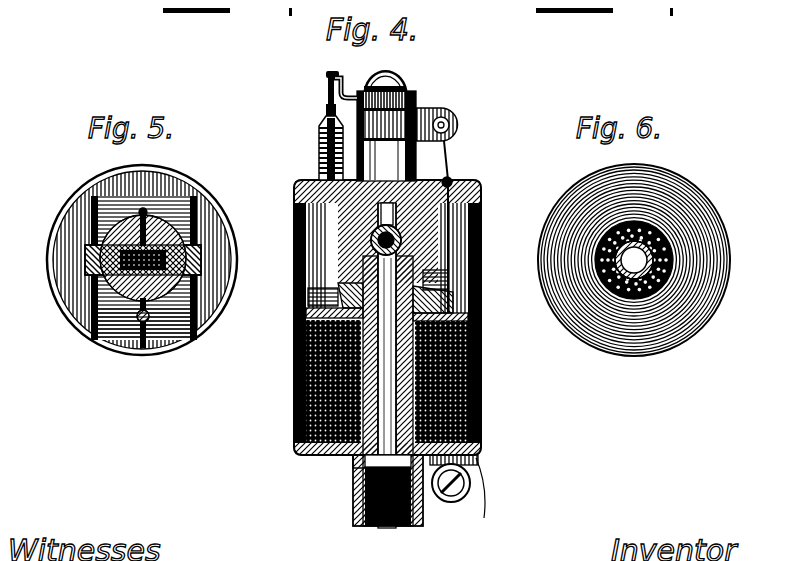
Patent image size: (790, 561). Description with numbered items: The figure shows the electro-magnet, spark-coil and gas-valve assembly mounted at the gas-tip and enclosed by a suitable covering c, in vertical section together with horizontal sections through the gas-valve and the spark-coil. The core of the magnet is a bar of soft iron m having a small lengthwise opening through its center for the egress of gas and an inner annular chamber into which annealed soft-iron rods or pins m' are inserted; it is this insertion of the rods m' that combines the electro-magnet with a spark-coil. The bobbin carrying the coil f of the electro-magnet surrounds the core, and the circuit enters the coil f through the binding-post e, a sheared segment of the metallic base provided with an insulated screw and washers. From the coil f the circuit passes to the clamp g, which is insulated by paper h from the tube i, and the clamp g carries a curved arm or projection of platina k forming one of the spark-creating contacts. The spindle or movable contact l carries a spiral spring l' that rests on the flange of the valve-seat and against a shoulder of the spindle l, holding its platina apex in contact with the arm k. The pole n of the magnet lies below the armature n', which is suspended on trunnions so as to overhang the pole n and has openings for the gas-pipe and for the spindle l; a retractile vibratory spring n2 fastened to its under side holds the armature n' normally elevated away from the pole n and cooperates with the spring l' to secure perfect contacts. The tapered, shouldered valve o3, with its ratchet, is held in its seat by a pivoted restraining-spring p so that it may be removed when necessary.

In FIG. 4, the covering c is at (287, 413).
In FIG. 5, the covering c is at (66, 198).
In FIG. 6, the covering c is at (592, 336).
In FIG. 4, the binding-post e is at (447, 496).
In FIG. 4, the coil of the electro-magnet f is at (473, 385).
In FIG. 6, the coil of the electro-magnet f is at (634, 260).
In FIG. 4, the clamp g is at (431, 106).
In FIG. 4, the paper insulation h is at (411, 100).
In FIG. 4, the tube i is at (386, 126).
In FIG. 4, the curved arm or projection of platina k is at (322, 66).
In FIG. 4, the spindle or movable contact l is at (305, 106).
In FIG. 5, the spindle or movable contact l is at (127, 278).
In FIG. 4, the spiral spring l' is at (296, 148).
In FIG. 4, the bar of soft iron m is at (359, 490).
In FIG. 6, the bar of soft iron m is at (624, 266).
In FIG. 4, the soft-iron rods or pins m' is at (338, 476).
In FIG. 6, the soft-iron rods or pins m' is at (658, 276).
In FIG. 4, the pole of the electro-magnet n is at (465, 306).
In FIG. 4, the armature n' is at (310, 290).
In FIG. 5, the armature n' is at (144, 324).
In FIG. 4, the retractile vibratory spring n2 is at (287, 300).
In FIG. 4, the valve o3 is at (370, 228).
In FIG. 5, the valve o3 is at (83, 276).
In FIG. 5, the pivoted restraining-spring p is at (196, 224).